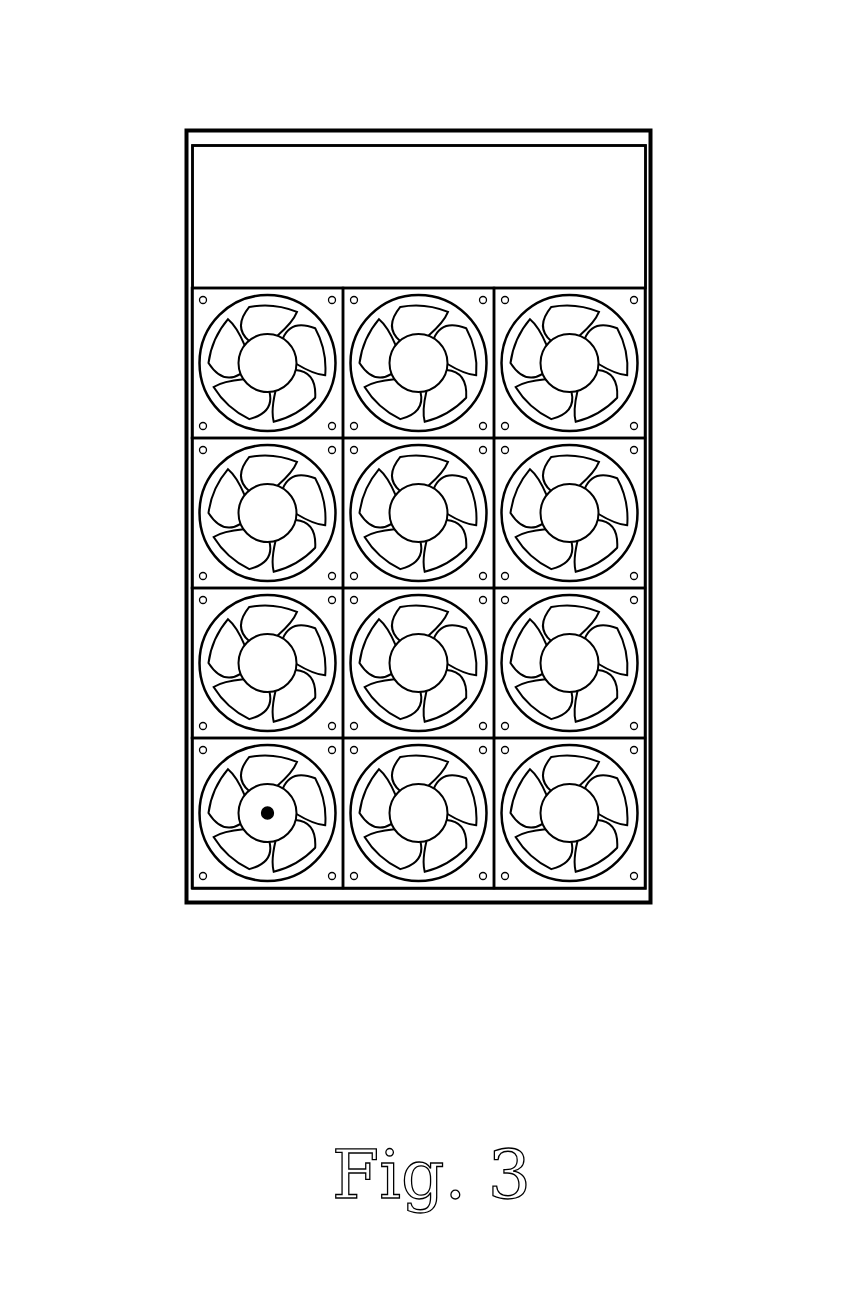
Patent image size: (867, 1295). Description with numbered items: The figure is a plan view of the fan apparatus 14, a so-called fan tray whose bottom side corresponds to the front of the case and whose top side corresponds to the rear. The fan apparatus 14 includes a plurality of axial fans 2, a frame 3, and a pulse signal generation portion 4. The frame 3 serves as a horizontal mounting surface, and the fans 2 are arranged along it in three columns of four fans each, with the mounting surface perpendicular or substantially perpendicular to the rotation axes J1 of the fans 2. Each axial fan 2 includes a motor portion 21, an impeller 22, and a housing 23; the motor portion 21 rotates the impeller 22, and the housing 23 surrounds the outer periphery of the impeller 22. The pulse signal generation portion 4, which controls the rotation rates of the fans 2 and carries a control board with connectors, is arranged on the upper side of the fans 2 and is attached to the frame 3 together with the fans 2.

The fan apparatus 14 is at (172, 72).
The pulse signal generation portion 4 is at (625, 203).
The axial fan 2 is at (432, 623).
The frame 3 is at (430, 897).
The motor portion 21 is at (612, 840).
The impeller 22 is at (612, 797).
The housing 23 is at (636, 770).
The rotation axis J1 is at (268, 819).